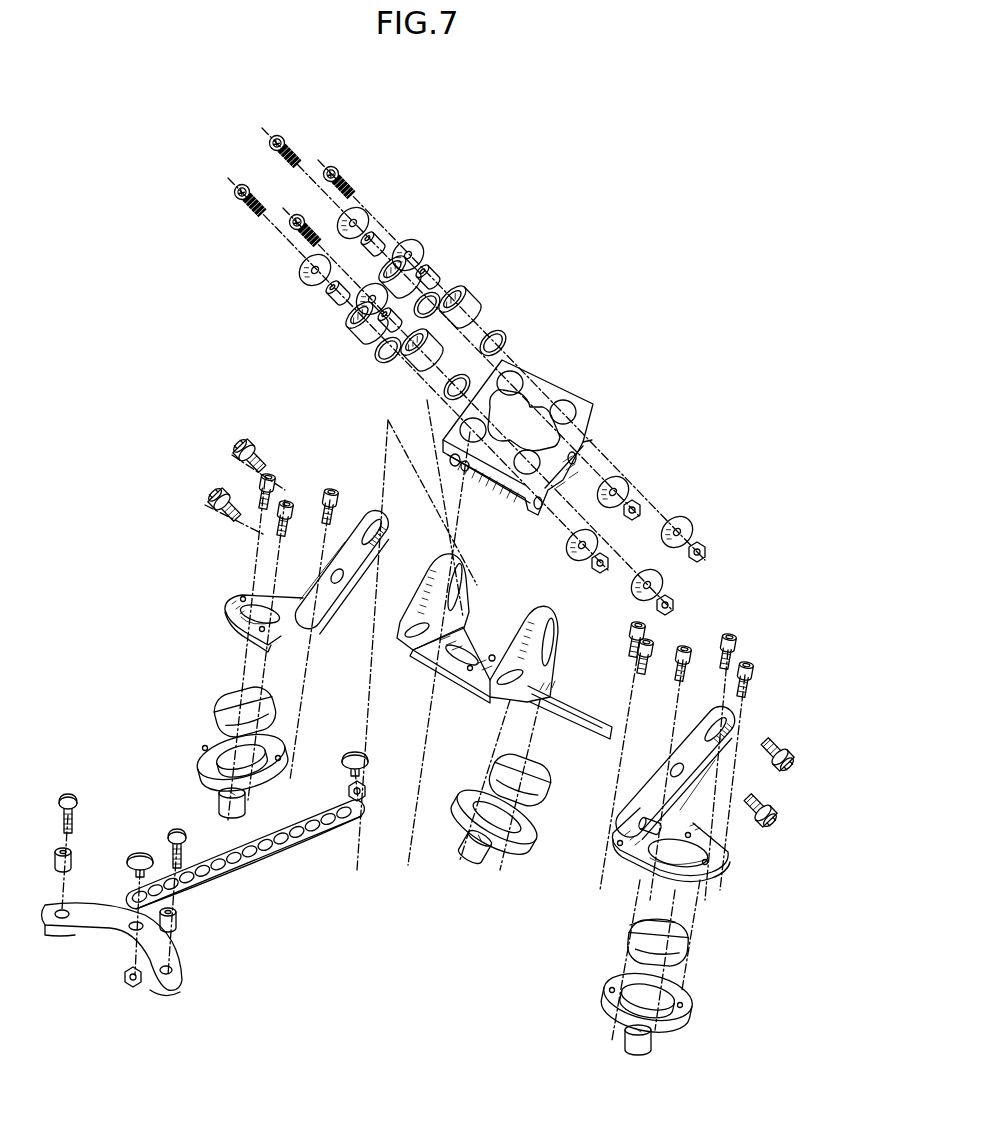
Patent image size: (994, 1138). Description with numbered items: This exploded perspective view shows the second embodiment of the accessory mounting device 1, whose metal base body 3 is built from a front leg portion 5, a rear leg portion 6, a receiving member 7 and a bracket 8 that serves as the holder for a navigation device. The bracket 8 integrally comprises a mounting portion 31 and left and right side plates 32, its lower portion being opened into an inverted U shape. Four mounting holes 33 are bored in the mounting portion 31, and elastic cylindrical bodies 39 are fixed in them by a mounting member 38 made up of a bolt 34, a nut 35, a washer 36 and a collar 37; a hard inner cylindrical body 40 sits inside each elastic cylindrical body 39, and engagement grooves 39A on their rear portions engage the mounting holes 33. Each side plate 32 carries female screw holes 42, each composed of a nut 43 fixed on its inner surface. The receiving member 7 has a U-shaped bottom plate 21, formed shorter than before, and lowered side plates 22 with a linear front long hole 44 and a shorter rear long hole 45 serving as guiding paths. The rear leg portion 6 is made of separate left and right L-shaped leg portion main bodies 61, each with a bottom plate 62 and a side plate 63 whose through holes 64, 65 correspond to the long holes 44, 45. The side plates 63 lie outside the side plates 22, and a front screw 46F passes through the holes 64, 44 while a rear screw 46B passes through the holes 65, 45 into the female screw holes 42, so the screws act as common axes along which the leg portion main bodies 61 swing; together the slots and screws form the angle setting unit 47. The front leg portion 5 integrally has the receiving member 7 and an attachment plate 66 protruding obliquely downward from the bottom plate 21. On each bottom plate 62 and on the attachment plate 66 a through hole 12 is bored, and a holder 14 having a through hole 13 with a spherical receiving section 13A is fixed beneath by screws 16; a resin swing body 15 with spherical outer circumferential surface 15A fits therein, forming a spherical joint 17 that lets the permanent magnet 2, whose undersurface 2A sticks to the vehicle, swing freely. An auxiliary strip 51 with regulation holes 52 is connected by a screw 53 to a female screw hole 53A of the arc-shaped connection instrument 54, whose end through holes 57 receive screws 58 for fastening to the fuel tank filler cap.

The lighting device 1 is at (160, 360).
The permanent magnet 2 is at (220, 800).
The undersurface 2A is at (630, 1057).
The base body 3 is at (735, 599).
The front leg portion 5 is at (551, 817).
The rear leg portion 6 is at (708, 1032).
The receiving member 7 is at (476, 666).
The bracket 8 is at (518, 405).
The through hole 12 is at (245, 603).
The through hole 13 is at (670, 985).
The spherical receiving section 13A is at (215, 745).
The holder 14 is at (200, 765).
The swing body 15 is at (230, 695).
The spherical outer circumferential surface 15A is at (620, 945).
The screw 16 is at (331, 497).
The spherical joint 17 is at (445, 892).
The bottom plate 21 is at (438, 672).
The side plate 22 is at (400, 635).
The mounting portion 31 is at (548, 383).
The side plate 32 is at (575, 440).
The mounting hole 33 is at (513, 380).
The bolt 34 is at (292, 216).
The nut 35 is at (706, 552).
The washer 36 is at (362, 216).
The collar 37 is at (500, 332).
The mounting member 38 is at (491, 190).
The elastic cylindrical body 39 is at (350, 322).
The engagement groove 39A is at (385, 350).
The hard inner cylindrical body 40 is at (408, 246).
The female screw hole 42 is at (545, 503).
The nut 43 is at (450, 464).
The front long hole 44 is at (458, 585).
The rear long hole 45 is at (415, 622).
The front screw 46F is at (247, 445).
The rear screw 46B is at (218, 497).
The angle setting unit 47 is at (757, 726).
The auxiliary strip 51 is at (230, 858).
The regulation hole 52 is at (265, 862).
The screw 53 is at (140, 853).
The female screw hole 53A is at (130, 932).
The connection instrument 54 is at (85, 925).
The through hole 57 is at (63, 905).
The screw 58 is at (70, 797).
The leg portion main body 61 is at (377, 594).
The bottom plate 62 is at (226, 628).
The side plate 63 is at (307, 590).
The through hole 64 is at (372, 532).
The through hole 65 is at (336, 576).
The attachment plate 66 is at (602, 740).